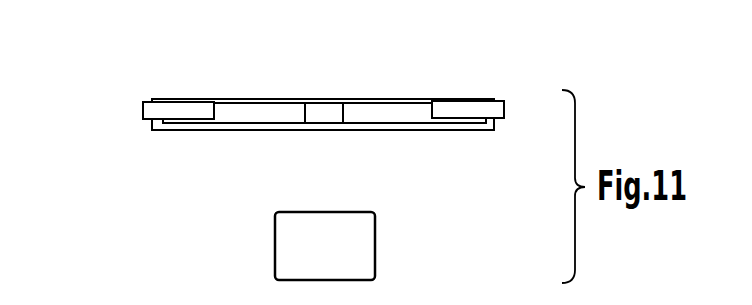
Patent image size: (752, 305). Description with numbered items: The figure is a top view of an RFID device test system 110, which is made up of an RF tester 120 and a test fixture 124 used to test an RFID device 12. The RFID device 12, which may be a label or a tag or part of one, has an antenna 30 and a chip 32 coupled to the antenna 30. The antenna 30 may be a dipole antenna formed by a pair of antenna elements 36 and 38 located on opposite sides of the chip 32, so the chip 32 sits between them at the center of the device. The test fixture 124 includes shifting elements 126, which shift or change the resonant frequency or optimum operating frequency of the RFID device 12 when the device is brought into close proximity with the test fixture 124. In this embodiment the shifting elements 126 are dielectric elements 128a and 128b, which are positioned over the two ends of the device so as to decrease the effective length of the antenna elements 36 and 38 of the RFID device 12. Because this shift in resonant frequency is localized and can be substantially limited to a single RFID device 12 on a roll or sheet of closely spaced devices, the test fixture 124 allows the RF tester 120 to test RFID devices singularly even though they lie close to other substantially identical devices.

The RFID device test system 110 is at (152, 70).
The RFID device 12 is at (502, 118).
The antenna 30 is at (185, 138).
The chip 32 is at (327, 115).
The antenna element 36 is at (253, 115).
The antenna element 38 is at (388, 115).
The RF tester 120 is at (375, 237).
The test fixture 124 is at (117, 97).
The shifting elements 126 is at (123, 123).
The dielectric element 128a is at (183, 112).
The dielectric element 128b is at (455, 108).